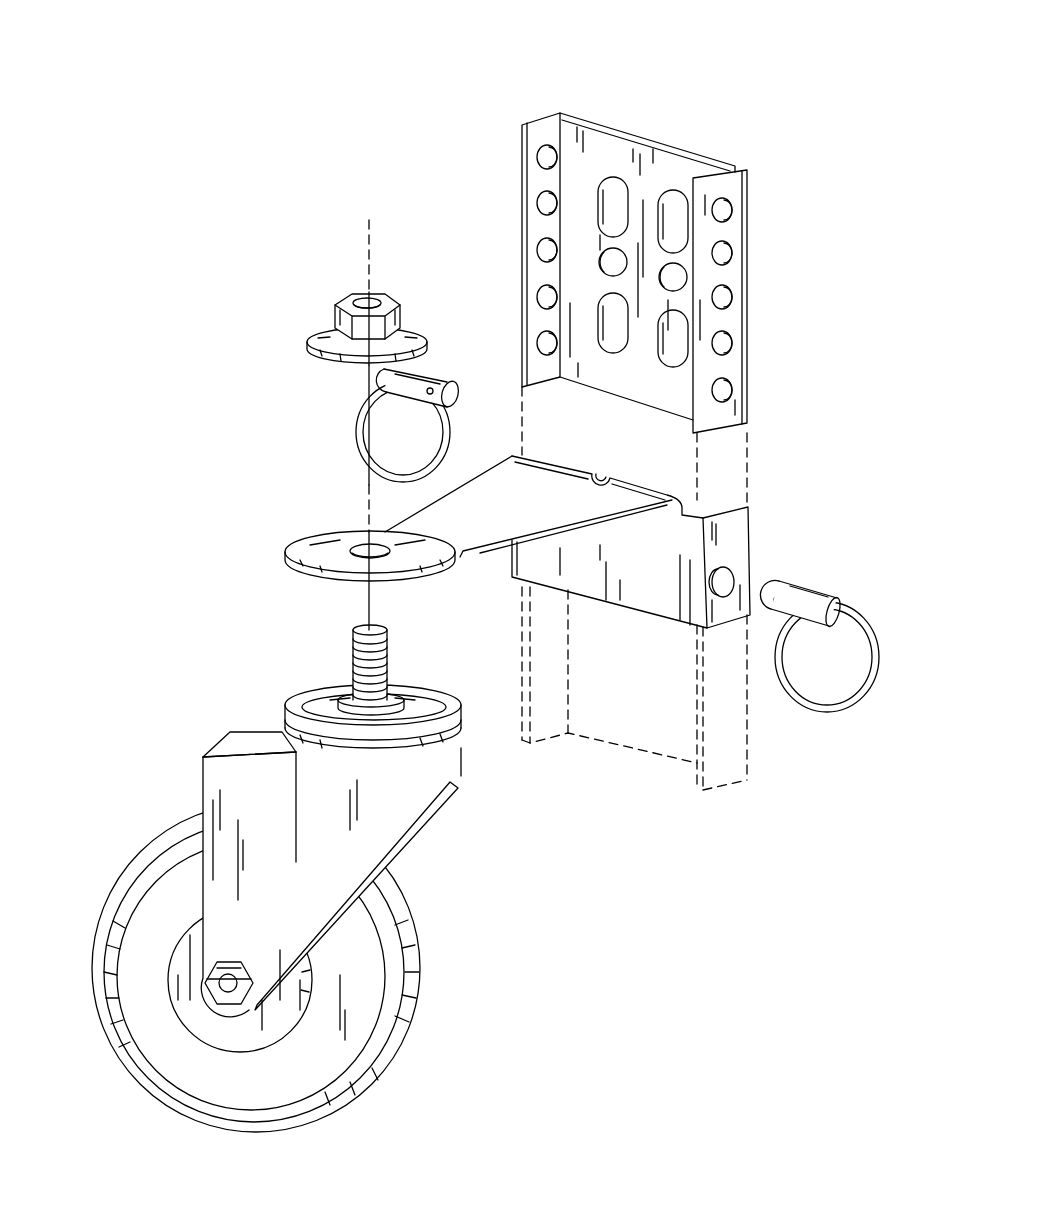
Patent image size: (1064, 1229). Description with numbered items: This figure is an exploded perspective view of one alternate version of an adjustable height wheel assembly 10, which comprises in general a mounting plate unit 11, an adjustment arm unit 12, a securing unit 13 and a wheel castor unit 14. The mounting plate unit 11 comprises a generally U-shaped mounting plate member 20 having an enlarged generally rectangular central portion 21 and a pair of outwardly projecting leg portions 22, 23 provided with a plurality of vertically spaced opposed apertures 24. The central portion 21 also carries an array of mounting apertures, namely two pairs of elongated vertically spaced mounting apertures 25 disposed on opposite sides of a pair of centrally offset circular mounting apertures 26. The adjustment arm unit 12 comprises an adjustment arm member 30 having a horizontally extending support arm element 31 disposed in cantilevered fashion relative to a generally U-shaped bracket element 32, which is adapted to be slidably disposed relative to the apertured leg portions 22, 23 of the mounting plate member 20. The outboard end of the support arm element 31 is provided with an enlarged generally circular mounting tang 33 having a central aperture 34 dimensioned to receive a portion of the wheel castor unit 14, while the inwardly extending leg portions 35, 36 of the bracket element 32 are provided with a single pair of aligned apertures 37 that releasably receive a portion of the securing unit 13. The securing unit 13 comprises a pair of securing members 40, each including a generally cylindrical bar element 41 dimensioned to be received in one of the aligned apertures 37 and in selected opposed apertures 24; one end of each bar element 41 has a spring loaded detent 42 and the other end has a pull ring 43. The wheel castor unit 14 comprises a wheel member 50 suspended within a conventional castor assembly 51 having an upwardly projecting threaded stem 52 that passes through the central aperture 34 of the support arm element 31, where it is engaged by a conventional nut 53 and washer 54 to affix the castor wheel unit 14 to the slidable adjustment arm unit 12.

The adjustable height wheel assembly 10 is at (275, 158).
The mounting plate unit 11 is at (728, 80).
The adjustment arm unit 12 is at (778, 497).
The securing unit 13 is at (328, 416).
The wheel castor unit 14 is at (150, 747).
The mounting plate member 20 is at (565, 70).
The central portion 21 is at (612, 127).
The leg portion 22 is at (735, 183).
The leg portion 23 is at (537, 122).
The opposed apertures 24 is at (542, 198).
The elongated mounting apertures 25 is at (616, 210).
The circular mounting apertures 26 is at (673, 272).
The adjustment arm member 30 is at (487, 420).
The support arm element 31 is at (517, 510).
The bracket element 32 is at (652, 582).
The mounting tang 33 is at (290, 545).
The central aperture 34 is at (368, 535).
The leg portion 35 is at (743, 532).
The leg portion 36 is at (550, 453).
The aligned apertures 37 is at (722, 578).
The securing member 40 is at (358, 387).
The cylindrical bar element 41 is at (440, 380).
The spring loaded detent 42 is at (428, 397).
The pull ring 43 is at (357, 447).
The wheel member 50 is at (243, 1090).
The castor assembly 51 is at (292, 893).
The threaded stem 52 is at (373, 663).
The nut 53 is at (345, 293).
The washer 54 is at (320, 330).